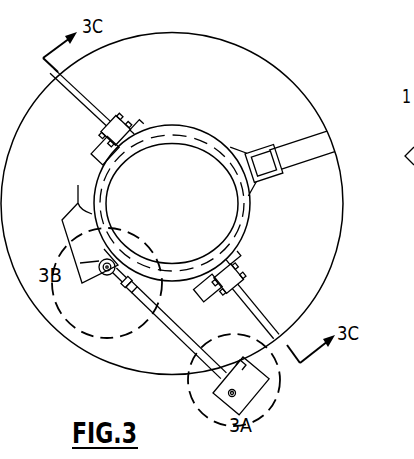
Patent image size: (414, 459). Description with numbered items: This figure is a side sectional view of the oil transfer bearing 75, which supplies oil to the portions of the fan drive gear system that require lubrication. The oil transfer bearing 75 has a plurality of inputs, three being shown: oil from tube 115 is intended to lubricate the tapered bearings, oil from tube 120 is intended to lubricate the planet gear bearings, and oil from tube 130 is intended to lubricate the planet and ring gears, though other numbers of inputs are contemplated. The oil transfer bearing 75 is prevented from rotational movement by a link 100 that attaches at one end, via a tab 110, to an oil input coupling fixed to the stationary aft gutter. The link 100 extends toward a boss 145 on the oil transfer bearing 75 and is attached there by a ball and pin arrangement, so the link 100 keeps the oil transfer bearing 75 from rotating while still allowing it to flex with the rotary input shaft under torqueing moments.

The oil transfer bearing 75 is at (288, 79).
The tube 115 is at (78, 92).
The tube 120 is at (300, 150).
The tube 130 is at (262, 307).
The boss 145 is at (78, 205).
The link 100 is at (180, 345).
The tab 110 is at (257, 378).